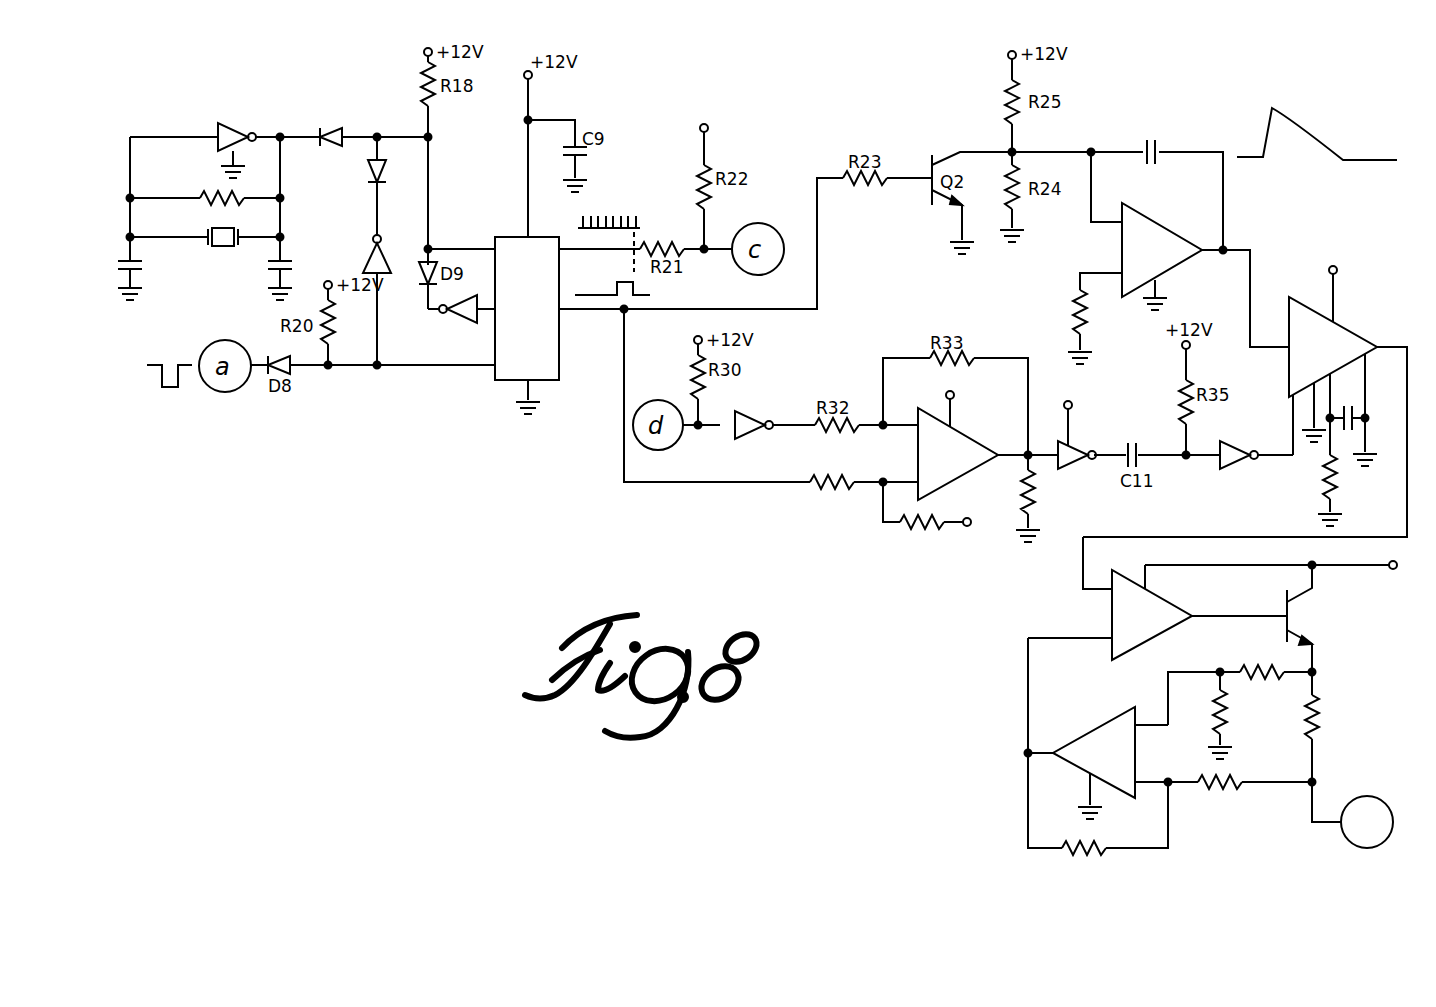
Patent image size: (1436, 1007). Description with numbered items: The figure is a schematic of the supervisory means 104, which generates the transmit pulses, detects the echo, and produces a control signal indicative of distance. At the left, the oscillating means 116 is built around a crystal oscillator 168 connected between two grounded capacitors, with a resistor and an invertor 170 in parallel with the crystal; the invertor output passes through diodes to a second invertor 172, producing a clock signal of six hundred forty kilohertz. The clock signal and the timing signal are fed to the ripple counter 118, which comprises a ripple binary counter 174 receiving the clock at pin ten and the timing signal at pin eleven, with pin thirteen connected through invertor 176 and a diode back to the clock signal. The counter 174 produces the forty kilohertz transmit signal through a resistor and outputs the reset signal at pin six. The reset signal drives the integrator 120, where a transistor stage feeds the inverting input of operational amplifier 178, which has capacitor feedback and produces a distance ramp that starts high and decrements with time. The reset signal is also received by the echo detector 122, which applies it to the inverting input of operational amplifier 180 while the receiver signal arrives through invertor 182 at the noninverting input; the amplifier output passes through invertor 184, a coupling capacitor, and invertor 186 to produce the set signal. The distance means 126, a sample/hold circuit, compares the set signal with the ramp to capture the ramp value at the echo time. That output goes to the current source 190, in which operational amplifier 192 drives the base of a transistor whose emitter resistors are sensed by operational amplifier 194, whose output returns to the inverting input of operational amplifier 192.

The oscillating means 116 is at (215, 122).
The invertor 170 is at (240, 134).
The invertor 172 is at (372, 235).
The crystal oscillator 168 is at (222, 247).
The invertor 176 is at (450, 316).
The ripple binary counter 174 is at (543, 386).
The ripple counter 118 is at (598, 192).
The supervisory means 104 is at (605, 495).
The integrator 120 is at (1118, 137).
The operational amplifier 178 is at (1148, 244).
The distance means 126 is at (1352, 340).
The invertor 182 is at (762, 420).
The operational amplifier 180 is at (950, 442).
The echo detector 122 is at (882, 534).
The invertor 184 is at (1084, 452).
The invertor 186 is at (1228, 463).
The operational amplifier 192 is at (1148, 614).
The operational amplifier 194 is at (1090, 745).
The current source 190 is at (1015, 716).